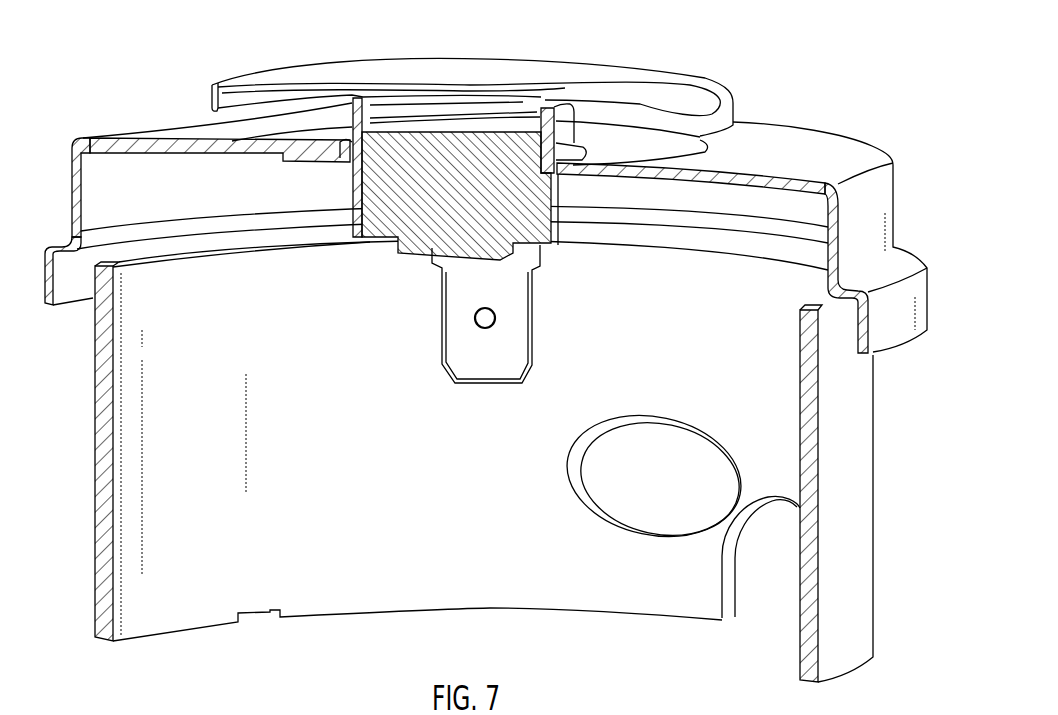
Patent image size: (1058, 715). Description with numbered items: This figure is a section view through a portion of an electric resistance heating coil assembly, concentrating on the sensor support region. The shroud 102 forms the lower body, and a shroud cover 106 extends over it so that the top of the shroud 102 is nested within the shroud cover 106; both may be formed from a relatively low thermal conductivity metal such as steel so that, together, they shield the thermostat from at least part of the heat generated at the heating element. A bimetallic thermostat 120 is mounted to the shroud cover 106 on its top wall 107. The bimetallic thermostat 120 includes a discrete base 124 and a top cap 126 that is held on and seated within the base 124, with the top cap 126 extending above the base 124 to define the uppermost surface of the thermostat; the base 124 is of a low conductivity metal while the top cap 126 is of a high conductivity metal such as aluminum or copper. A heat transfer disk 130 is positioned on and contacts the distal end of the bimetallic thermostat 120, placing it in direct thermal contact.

The shroud 102 is at (152, 587).
The shroud cover 106 is at (877, 236).
The top wall 107 is at (803, 150).
The bimetallic thermostat 120 is at (418, 240).
The base 124 is at (558, 216).
The top cap 126 is at (393, 95).
The heat transfer disk 130 is at (633, 70).